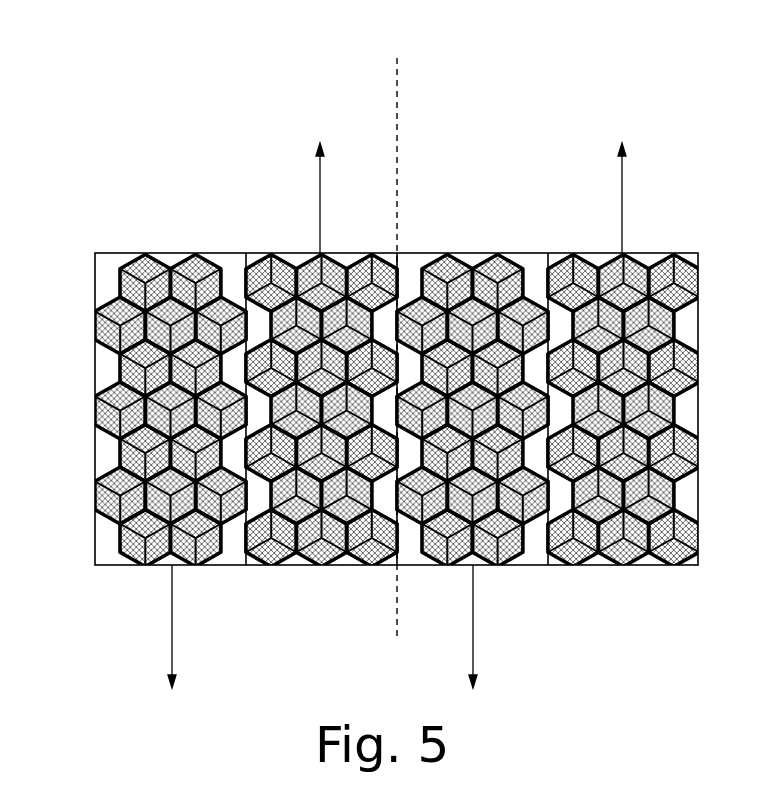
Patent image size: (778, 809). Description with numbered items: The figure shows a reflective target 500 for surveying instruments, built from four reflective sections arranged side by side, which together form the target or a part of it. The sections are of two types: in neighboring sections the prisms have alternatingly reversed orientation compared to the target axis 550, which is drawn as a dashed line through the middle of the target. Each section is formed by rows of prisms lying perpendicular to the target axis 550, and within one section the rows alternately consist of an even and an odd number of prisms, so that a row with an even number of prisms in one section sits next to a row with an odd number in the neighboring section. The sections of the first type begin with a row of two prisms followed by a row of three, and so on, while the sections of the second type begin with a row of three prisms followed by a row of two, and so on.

The reflective target 500 is at (365, 415).
The target axis 550 is at (397, 172).